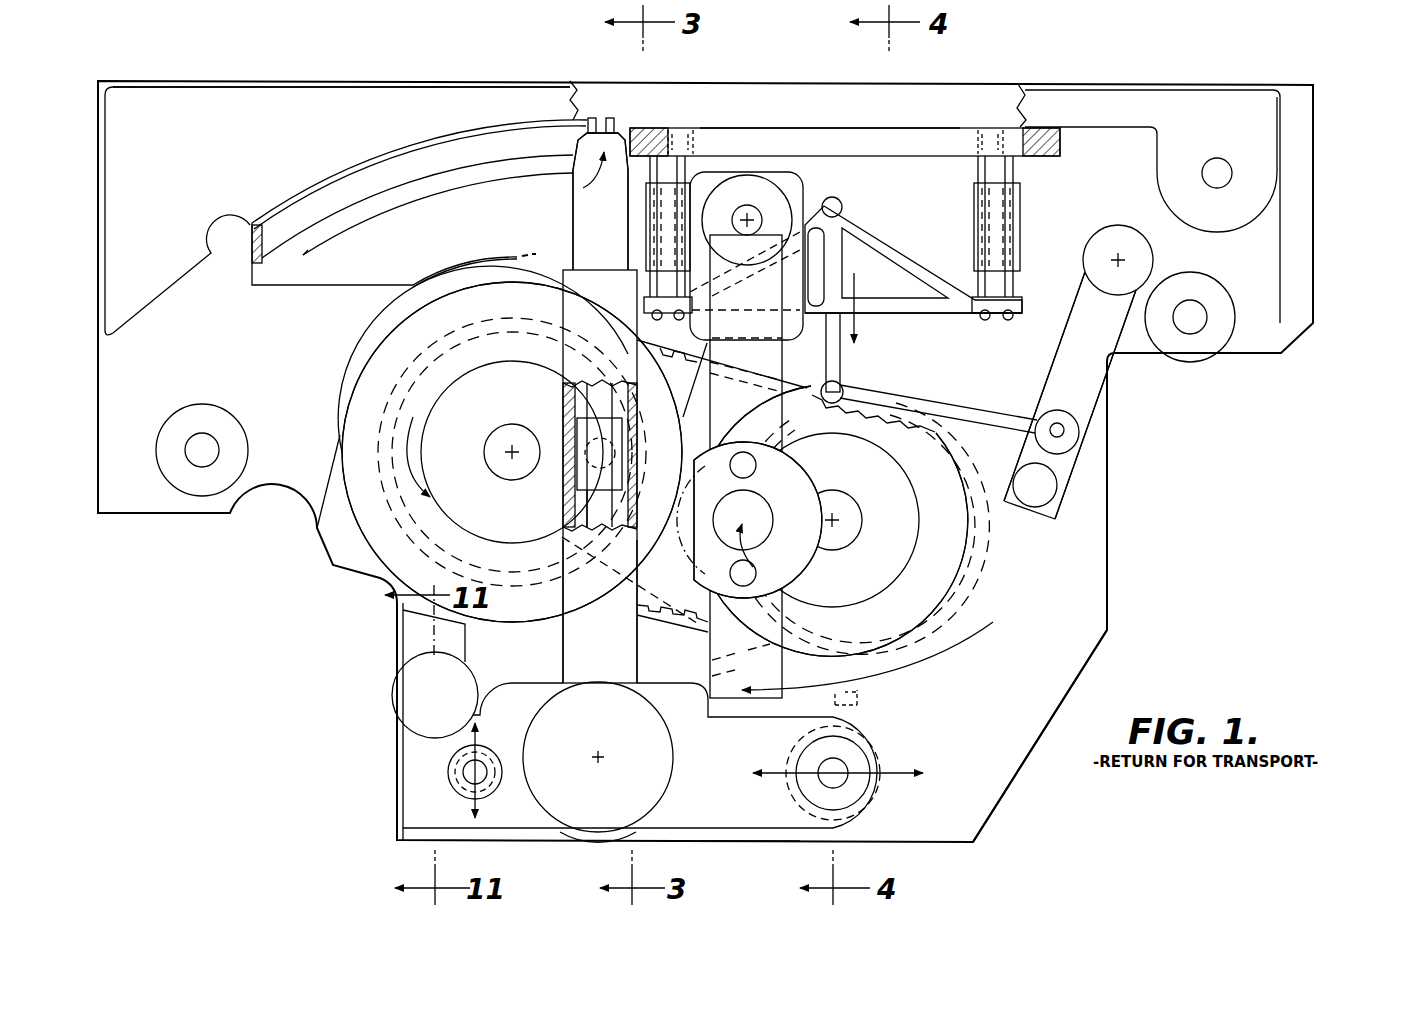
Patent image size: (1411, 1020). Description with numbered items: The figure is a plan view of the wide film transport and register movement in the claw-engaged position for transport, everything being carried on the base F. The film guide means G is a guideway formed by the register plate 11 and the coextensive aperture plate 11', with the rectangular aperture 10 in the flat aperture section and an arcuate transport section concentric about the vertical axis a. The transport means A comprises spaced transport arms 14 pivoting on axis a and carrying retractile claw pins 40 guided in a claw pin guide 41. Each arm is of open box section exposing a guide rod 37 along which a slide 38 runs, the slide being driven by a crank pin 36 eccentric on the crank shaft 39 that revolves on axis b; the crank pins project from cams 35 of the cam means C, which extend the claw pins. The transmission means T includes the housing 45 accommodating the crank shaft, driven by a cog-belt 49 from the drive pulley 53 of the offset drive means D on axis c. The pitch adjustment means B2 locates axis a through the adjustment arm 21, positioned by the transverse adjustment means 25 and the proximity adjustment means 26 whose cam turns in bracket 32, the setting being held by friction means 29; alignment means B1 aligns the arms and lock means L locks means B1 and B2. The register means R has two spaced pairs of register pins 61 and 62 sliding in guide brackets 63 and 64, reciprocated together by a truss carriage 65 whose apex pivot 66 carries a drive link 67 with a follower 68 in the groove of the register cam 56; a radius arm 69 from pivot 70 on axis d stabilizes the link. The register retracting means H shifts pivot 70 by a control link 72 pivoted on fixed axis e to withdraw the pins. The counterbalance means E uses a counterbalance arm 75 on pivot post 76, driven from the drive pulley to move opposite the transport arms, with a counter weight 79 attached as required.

The aperture 10 is at (845, 142).
The register plate 11 is at (830, 90).
The aperture plate 11' is at (341, 67).
The transport arms 14 is at (578, 650).
The adjustment arm 21 is at (415, 803).
The transverse adjustment means 25 is at (862, 748).
The proximity adjustment means 26 is at (425, 695).
The friction means 29 is at (458, 772).
The bracket 32 is at (408, 636).
The cam 35 is at (566, 455).
The crank pin 36 is at (596, 463).
The guide rod 37 is at (592, 522).
The slide 38 is at (612, 493).
The crank shaft 39 is at (405, 382).
The claw pins 40 is at (609, 117).
The claw pin guide 41 is at (585, 202).
The housing 45 is at (392, 335).
The cog-belt 49 is at (657, 625).
The drive pulley 53 is at (950, 537).
The register cam 56 is at (955, 598).
The register pins 61 is at (1006, 128).
The register pins 62 is at (685, 128).
The guide bracket 63 is at (1022, 225).
The guide bracket 64 is at (646, 243).
The carriage 65 is at (878, 318).
The pivot 66 is at (842, 205).
The drive link 67 is at (841, 356).
The follower 68 is at (845, 390).
The radius arm 69 is at (962, 410).
The pivot 70 is at (1072, 432).
The control link 72 is at (1050, 338).
The counterbalance arm 75 is at (775, 616).
The pivot post 76 is at (747, 205).
The counter weight 79 is at (802, 565).
The transport means A is at (570, 228).
The alignment means B1 is at (578, 803).
The pitch adjustment means B2 is at (745, 805).
The cam means C is at (425, 425).
The offset drive means D is at (928, 570).
The counterbalance means E is at (786, 482).
The base F is at (1075, 632).
The film guide means G is at (376, 108).
The register retracting means H is at (1075, 383).
The lock means L is at (628, 764).
The register means R is at (918, 255).
The transmission means T is at (365, 403).
The axis a is at (620, 745).
The axis b is at (512, 450).
The axis c is at (836, 518).
The axis d is at (1062, 440).
The axis e is at (1120, 262).